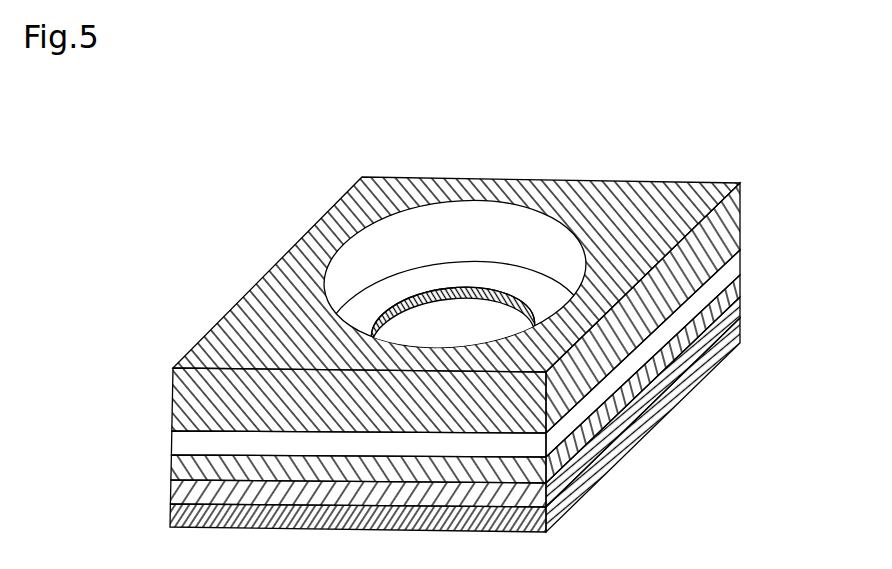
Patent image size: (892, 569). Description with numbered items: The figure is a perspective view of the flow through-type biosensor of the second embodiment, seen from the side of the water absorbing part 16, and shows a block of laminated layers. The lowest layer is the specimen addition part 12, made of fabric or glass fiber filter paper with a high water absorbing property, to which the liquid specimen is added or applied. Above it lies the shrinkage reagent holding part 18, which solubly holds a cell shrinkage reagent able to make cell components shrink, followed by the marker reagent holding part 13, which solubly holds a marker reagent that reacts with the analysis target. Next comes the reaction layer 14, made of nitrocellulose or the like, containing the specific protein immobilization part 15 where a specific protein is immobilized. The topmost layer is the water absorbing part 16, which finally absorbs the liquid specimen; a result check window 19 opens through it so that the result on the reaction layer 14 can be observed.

The specimen addition part 12 is at (739, 329).
The marker reagent holding part 13 is at (740, 277).
The reaction layer 14 is at (740, 248).
The specific protein immobilization part 15 is at (385, 313).
The water absorbing part 16 is at (670, 197).
The shrinkage reagent holding part 18 is at (739, 304).
The result check window 19 is at (425, 218).